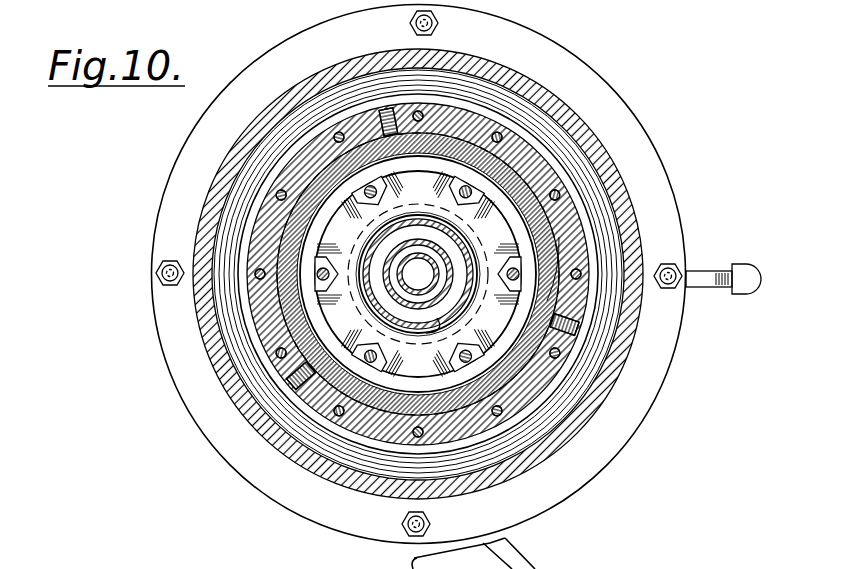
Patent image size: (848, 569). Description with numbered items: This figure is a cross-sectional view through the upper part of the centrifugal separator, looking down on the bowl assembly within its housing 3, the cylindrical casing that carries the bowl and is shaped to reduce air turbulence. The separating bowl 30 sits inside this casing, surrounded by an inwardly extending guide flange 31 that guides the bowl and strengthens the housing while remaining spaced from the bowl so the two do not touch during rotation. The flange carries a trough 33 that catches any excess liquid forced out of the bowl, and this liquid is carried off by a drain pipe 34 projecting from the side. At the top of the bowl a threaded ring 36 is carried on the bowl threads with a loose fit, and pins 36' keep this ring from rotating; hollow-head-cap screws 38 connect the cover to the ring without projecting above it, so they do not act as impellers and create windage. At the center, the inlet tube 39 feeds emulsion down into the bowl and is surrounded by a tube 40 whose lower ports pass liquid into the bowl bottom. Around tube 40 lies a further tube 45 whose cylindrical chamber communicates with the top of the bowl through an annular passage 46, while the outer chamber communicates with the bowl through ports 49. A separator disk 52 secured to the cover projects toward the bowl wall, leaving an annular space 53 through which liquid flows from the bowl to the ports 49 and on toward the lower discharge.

The housing 3 is at (207, 347).
The separating bowl 30 is at (513, 380).
The guide flange 31 is at (216, 262).
The trough 33 is at (592, 168).
The drain pipe 34 is at (743, 276).
The threaded ring 36 is at (349, 274).
The pin 36' is at (445, 259).
The hollow-head-cap screw 38 is at (262, 190).
The inlet tube 39 is at (435, 258).
The tube 40 is at (388, 293).
The tube 45 is at (382, 256).
The annular passage 46 is at (434, 332).
The ports 49 is at (418, 274).
The separator disk 52 is at (368, 380).
The annular space 53 is at (548, 350).